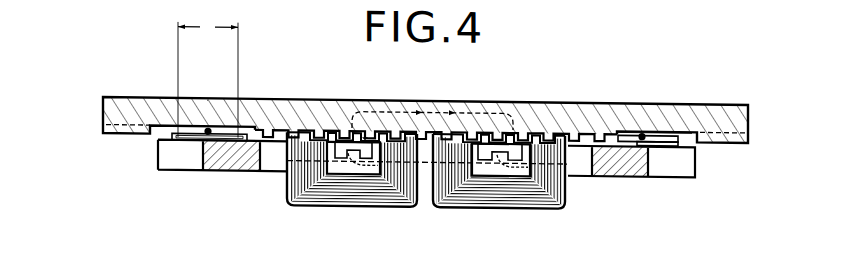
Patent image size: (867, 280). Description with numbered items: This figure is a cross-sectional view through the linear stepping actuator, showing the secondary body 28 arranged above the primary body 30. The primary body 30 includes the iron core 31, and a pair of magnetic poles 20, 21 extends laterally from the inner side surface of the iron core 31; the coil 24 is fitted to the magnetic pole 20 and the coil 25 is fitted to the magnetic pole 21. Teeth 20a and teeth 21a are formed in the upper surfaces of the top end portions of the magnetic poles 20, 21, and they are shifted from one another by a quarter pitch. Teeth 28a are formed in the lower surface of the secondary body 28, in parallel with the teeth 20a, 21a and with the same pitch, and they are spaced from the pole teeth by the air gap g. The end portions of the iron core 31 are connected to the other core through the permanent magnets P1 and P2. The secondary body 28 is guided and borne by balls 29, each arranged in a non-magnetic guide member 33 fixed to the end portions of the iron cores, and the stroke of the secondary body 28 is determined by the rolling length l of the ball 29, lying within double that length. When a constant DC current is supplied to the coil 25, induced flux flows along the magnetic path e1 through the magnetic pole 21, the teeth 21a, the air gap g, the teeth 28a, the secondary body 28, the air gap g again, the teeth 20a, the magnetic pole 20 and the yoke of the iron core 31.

The magnetic pole 20 is at (507, 155).
The teeth 20a is at (510, 142).
The magnetic pole 21 is at (357, 172).
The teeth 21a is at (345, 145).
The coil 24 is at (477, 178).
The coil 25 is at (392, 190).
The secondary body 28 is at (513, 123).
The teeth 28a is at (345, 125).
The ball 29 is at (208, 126).
The primary body 30 is at (272, 185).
The iron core 31 is at (162, 158).
The guide member 33 is at (188, 139).
The permanent magnet P1 is at (612, 154).
The permanent magnet P2 is at (227, 157).
The air gap g is at (370, 130).
The magnetic path e1 is at (434, 107).
The rolling length l is at (208, 77).